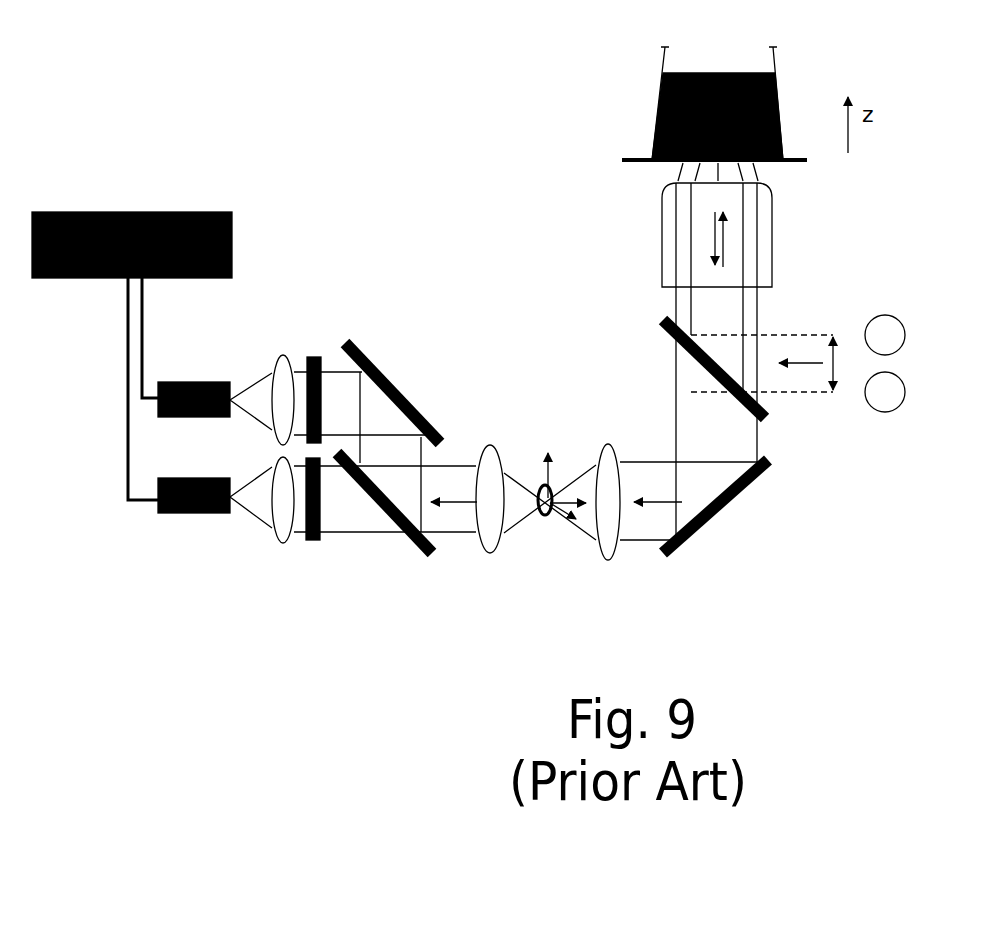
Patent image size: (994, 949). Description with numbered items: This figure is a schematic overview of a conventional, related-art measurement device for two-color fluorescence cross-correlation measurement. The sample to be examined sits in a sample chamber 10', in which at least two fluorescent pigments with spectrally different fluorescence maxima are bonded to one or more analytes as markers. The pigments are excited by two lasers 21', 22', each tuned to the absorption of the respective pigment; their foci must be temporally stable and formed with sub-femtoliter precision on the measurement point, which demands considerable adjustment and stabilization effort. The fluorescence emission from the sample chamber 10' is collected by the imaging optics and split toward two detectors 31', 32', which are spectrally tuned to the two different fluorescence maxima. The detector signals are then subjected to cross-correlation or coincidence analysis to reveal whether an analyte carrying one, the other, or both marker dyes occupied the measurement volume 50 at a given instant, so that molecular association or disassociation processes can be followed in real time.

The sample chamber 10' is at (742, 94).
The laser 21' is at (901, 312).
The laser 22' is at (870, 429).
The detector 31' is at (215, 374).
The detector 32' is at (214, 535).
The focal point / pinhole 50 is at (565, 461).